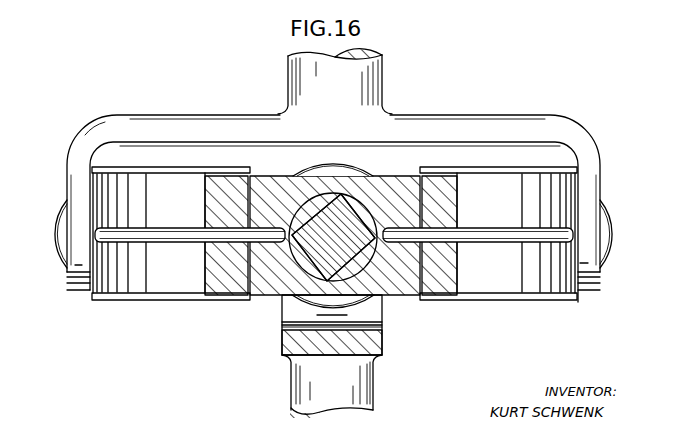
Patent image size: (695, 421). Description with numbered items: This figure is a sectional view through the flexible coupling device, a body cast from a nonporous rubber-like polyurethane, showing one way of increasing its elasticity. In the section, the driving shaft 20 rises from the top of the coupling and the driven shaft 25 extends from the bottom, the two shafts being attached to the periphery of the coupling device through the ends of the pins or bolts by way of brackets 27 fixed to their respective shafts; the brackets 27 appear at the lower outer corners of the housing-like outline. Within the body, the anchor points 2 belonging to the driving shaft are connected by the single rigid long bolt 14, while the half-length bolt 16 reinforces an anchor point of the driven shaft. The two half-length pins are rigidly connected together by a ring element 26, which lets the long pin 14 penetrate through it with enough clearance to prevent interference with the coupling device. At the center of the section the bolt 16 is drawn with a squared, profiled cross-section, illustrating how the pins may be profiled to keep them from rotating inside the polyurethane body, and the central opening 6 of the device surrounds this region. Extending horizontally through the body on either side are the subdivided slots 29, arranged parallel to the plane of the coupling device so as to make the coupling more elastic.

The anchor points 2 is at (143, 319).
The central openings 6 is at (405, 296).
The bolt 14 is at (608, 228).
The half-length bolt 16 is at (348, 200).
The driving shaft 20 is at (383, 84).
The driven shaft 25 is at (288, 388).
The ring element 26 is at (312, 172).
The bracket 27 is at (67, 288).
The subdivided slots 29 is at (172, 240).